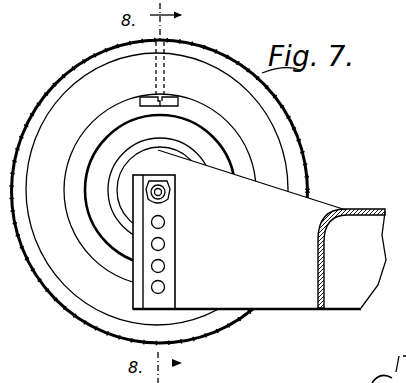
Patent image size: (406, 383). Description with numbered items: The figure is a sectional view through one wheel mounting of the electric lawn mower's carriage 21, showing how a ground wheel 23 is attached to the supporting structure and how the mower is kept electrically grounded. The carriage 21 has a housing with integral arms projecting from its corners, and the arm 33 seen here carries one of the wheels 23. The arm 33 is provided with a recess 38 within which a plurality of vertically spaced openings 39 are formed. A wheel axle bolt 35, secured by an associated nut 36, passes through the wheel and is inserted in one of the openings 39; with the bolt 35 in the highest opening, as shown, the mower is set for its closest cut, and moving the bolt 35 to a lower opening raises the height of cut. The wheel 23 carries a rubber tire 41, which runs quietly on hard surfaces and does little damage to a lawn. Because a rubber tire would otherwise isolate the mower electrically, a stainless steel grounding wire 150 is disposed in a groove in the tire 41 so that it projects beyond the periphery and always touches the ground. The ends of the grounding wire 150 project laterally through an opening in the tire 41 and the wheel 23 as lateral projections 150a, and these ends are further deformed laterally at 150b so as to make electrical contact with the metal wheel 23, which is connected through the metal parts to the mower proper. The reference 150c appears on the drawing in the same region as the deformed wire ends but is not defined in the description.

The rubber tire 41 is at (47, 93).
The grounding wire 150 is at (44, 287).
The lateral projection of grounding wire 150a is at (172, 58).
The laterally deformed end of grounding wire 150b is at (128, 100).
The clip lug 150c is at (174, 99).
The ground wheel 23 is at (222, 128).
The carriage 21 is at (366, 208).
The nut 36 is at (153, 174).
The wheel axle bolt 35 is at (168, 190).
The recess 38 is at (171, 223).
The vertically spaced openings 39 is at (165, 283).
The arm 33 is at (293, 295).